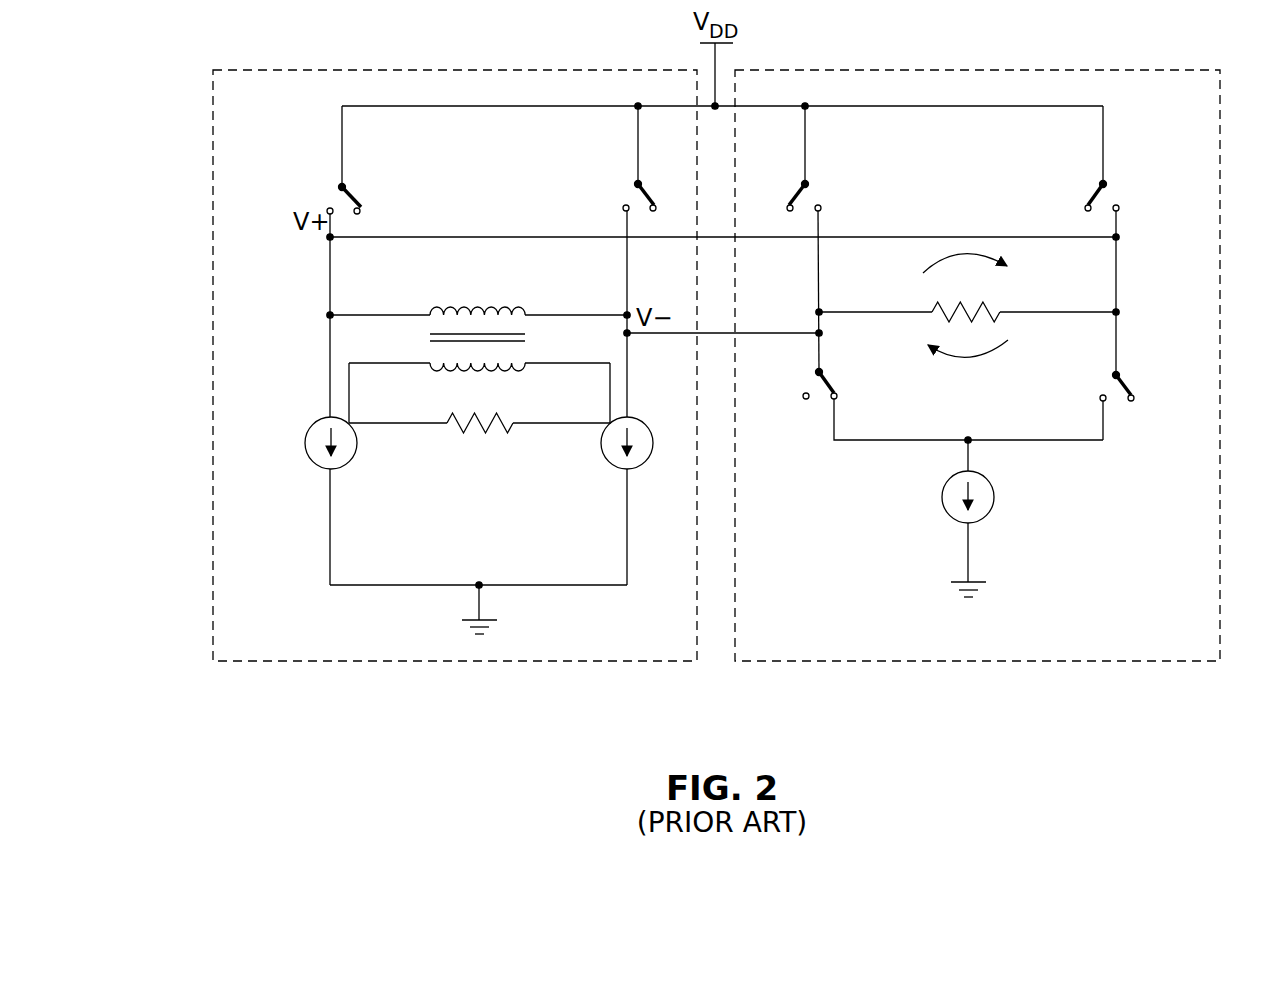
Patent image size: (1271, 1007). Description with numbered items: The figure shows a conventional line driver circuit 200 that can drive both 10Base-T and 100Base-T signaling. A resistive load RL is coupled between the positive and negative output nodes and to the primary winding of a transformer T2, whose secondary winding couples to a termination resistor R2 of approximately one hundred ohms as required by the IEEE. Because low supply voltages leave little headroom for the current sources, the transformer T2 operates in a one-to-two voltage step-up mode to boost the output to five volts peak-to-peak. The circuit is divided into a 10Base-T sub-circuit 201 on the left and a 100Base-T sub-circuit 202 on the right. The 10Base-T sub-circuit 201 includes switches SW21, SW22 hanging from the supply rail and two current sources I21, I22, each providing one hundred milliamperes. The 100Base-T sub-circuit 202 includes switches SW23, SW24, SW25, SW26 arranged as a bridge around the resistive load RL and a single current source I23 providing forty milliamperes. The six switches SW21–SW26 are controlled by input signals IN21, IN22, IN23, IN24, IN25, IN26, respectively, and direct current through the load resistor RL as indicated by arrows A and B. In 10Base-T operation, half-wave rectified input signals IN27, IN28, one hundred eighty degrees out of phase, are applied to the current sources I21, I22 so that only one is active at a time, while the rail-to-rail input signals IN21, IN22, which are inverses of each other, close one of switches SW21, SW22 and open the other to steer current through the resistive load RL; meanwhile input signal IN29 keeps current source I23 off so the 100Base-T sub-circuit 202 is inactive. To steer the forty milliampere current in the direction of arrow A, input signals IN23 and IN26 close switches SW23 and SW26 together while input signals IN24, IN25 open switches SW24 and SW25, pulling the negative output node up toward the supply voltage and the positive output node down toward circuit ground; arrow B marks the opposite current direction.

The line driver circuit 200 is at (736, 708).
The 10Base-T sub-circuit 201 is at (546, 64).
The 100Base-T sub-circuit 202 is at (986, 64).
The switch SW21 is at (352, 199).
The switch SW22 is at (634, 190).
The switch SW23 is at (792, 196).
The switch SW24 is at (1095, 194).
The switch SW25 is at (838, 384).
The switch SW26 is at (1136, 388).
The input signal IN21 is at (338, 199).
The input signal IN22 is at (613, 210).
The input signal IN23 is at (812, 194).
The input signal IN24 is at (1110, 197).
The input signal IN25 is at (809, 385).
The input signal IN26 is at (1129, 371).
The input signal IN27 is at (310, 474).
The input signal IN28 is at (608, 474).
The input signal IN29 is at (947, 522).
The current source I21 is at (316, 418).
The current source I22 is at (643, 419).
The current source I23 is at (996, 497).
The transformer T2 is at (399, 313).
The termination resistor R2 is at (479, 414).
The resistive load RL is at (967, 295).
The arrow A is at (925, 268).
The arrow B is at (1008, 343).